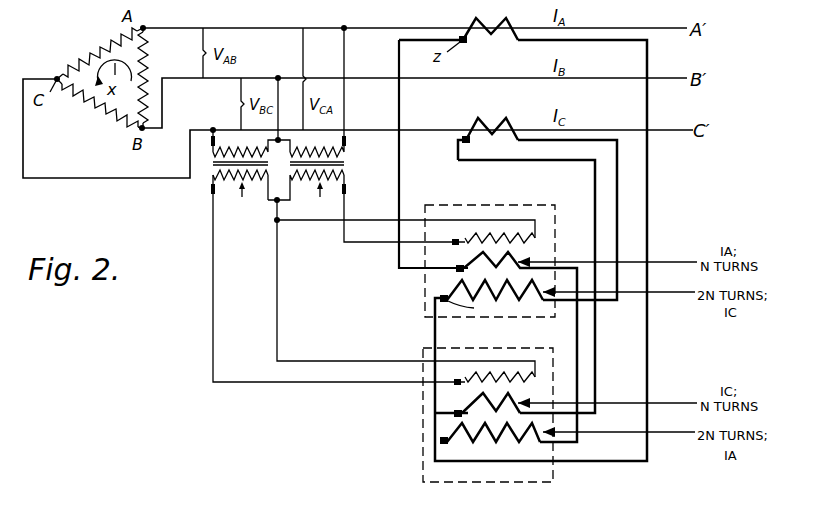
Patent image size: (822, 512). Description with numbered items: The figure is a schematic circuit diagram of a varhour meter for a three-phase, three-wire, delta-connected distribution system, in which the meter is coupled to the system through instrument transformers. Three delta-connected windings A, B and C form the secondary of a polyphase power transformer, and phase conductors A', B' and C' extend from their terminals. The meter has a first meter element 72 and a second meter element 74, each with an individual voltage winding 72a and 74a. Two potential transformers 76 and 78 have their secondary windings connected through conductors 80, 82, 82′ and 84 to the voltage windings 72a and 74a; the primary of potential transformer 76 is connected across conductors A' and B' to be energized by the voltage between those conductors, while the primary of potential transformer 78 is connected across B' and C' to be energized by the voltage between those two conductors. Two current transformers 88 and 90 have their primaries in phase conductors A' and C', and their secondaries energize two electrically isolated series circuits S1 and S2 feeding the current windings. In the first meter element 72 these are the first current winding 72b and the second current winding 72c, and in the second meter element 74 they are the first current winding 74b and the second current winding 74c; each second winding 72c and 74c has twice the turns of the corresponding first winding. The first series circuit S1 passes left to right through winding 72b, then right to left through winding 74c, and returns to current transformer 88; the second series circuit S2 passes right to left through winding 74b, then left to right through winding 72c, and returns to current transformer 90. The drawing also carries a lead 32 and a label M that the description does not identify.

The lead from switch to winding 72b 32 is at (399, 100).
The first meter element 72 is at (462, 205).
The voltage winding 72a is at (452, 241).
The first current winding 72b is at (456, 267).
The second current winding 72c is at (440, 297).
The second meter element 74 is at (428, 348).
The voltage winding 74a is at (464, 372).
The first current winding 74b is at (470, 401).
The second current winding 74c is at (440, 439).
The potential transformer 76 is at (307, 120).
The potential transformer 78 is at (244, 175).
The conductor 80 is at (346, 207).
The conductor 82 is at (314, 221).
The conductor 82′ is at (277, 325).
The conductor 84 is at (213, 312).
The current transformer 88 is at (497, 42).
The current transformer 90 is at (497, 142).
The first series circuit S1 is at (399, 57).
The second series circuit S2 is at (458, 153).
The motor M is at (578, 195).